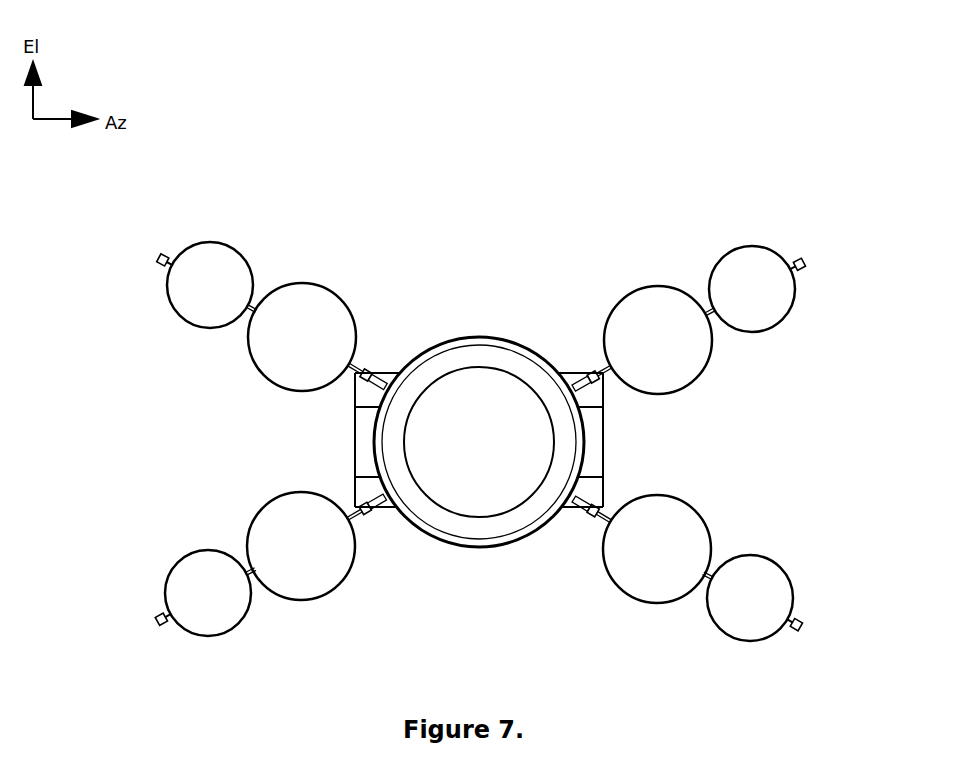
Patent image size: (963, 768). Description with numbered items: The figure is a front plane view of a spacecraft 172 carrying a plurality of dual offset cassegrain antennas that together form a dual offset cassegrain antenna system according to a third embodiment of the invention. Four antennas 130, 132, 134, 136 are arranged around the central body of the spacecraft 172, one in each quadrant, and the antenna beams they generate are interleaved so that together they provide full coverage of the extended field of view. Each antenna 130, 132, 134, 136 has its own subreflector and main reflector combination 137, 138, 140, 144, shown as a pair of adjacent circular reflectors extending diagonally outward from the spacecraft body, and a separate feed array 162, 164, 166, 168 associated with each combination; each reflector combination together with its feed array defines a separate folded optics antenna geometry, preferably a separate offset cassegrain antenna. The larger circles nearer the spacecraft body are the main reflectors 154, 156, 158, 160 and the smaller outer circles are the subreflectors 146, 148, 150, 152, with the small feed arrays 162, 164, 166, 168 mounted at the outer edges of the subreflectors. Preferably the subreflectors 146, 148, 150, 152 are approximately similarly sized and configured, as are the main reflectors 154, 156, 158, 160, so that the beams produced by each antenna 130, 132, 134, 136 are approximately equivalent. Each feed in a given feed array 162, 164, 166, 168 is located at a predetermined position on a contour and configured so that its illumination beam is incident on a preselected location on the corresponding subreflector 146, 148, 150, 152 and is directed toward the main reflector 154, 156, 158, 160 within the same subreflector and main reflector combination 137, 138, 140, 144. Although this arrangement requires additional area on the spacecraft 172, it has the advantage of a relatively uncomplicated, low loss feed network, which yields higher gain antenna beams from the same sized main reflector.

The spacecraft 172 is at (214, 34).
The antenna 130 is at (324, 236).
The antenna 132 is at (681, 237).
The antenna 134 is at (677, 677).
The antenna 136 is at (321, 676).
The subreflector and main reflector combination 137 is at (242, 361).
The subreflector and main reflector combination 138 is at (761, 366).
The subreflector and main reflector combination 140 is at (761, 547).
The subreflector and main reflector combination 144 is at (239, 542).
The subreflector 146 is at (183, 253).
The subreflector 148 is at (780, 252).
The subreflector 150 is at (778, 633).
The subreflector 152 is at (180, 629).
The main reflector 154 is at (270, 376).
The main reflector 156 is at (700, 376).
The main reflector 158 is at (705, 518).
The main reflector 160 is at (253, 513).
The feed array 162 is at (154, 259).
The feed array 164 is at (808, 263).
The feed array 166 is at (806, 624).
The feed array 168 is at (154, 620).